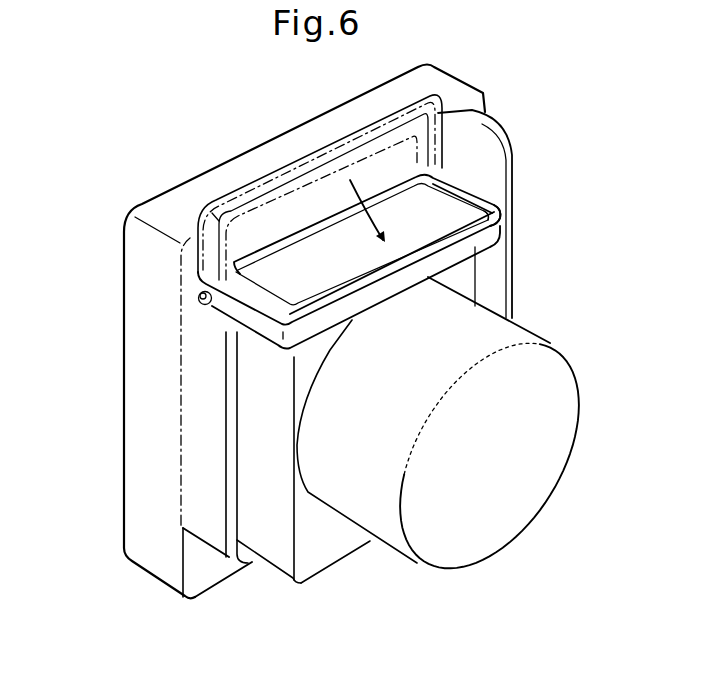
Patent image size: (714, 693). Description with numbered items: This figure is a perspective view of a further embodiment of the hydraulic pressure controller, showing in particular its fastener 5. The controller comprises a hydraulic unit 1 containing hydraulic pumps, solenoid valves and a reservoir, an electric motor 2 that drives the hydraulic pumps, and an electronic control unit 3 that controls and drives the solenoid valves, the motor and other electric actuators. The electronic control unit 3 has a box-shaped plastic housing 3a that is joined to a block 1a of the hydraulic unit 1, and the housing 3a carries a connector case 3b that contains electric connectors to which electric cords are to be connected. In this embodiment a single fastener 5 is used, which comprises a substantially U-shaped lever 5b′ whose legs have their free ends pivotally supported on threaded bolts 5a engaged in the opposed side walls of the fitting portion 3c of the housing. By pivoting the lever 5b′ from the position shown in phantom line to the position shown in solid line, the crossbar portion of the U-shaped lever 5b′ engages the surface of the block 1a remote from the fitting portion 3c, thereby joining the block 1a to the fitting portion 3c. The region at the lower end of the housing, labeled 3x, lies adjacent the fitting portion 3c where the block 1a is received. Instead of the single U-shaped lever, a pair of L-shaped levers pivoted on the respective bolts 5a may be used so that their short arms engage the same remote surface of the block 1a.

The hydraulic unit 1 is at (472, 183).
The block 1a is at (335, 548).
The electric motor 2 is at (536, 327).
The electronic control unit 3 is at (167, 181).
The housing 3a is at (147, 408).
The connector case 3b is at (480, 125).
The fitting portion 3c is at (200, 500).
The bottom ledge of housing 3x is at (205, 575).
The fastener 5 is at (187, 283).
The threaded bolts 5a is at (198, 297).
The U-shaped lever 5b′ is at (483, 230).